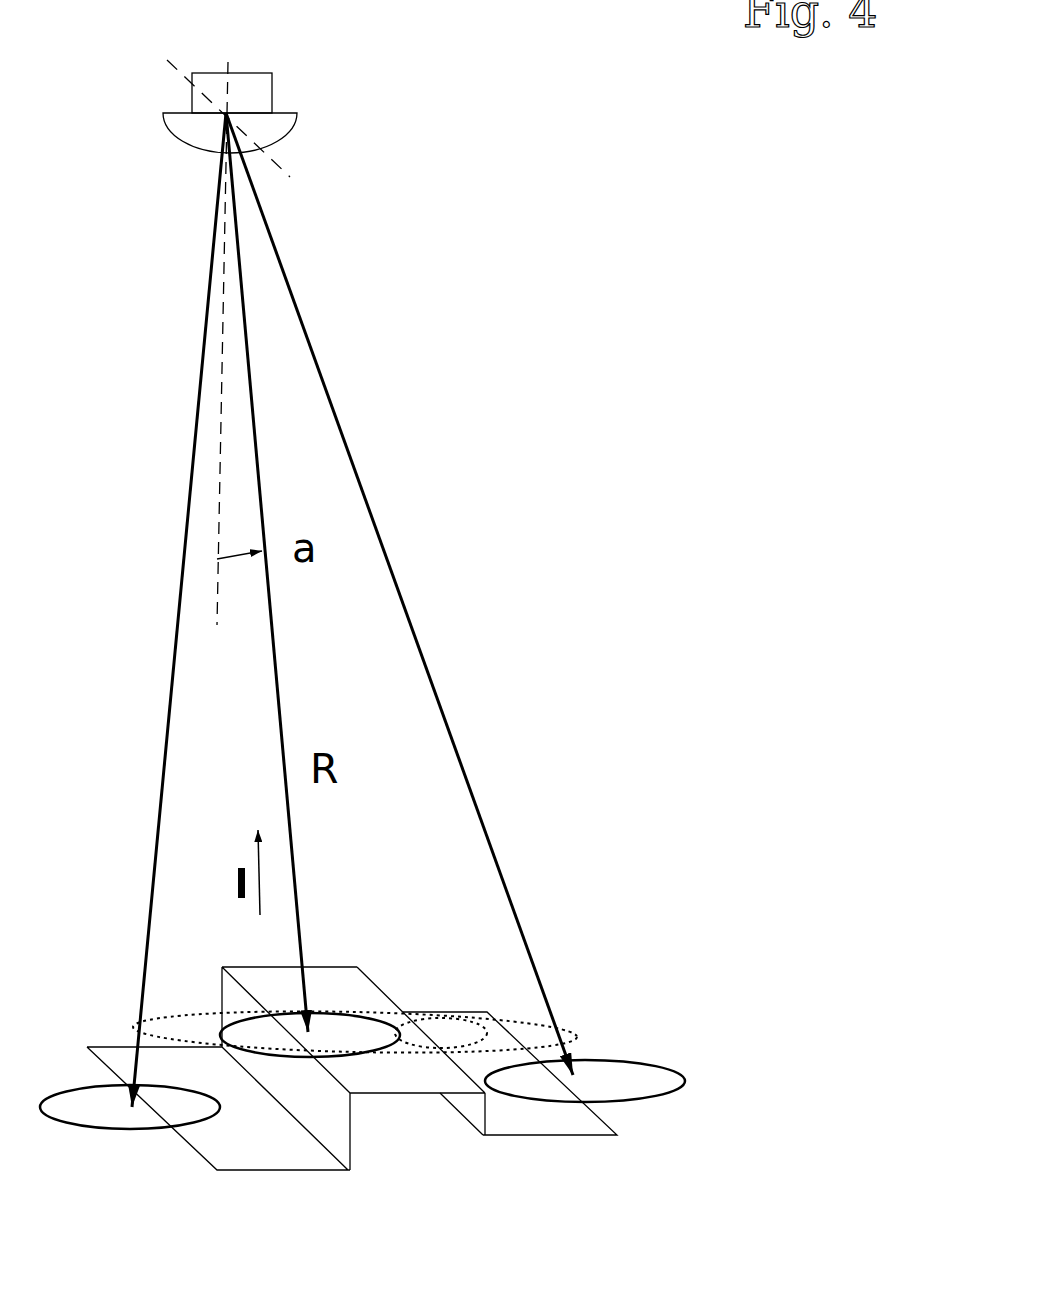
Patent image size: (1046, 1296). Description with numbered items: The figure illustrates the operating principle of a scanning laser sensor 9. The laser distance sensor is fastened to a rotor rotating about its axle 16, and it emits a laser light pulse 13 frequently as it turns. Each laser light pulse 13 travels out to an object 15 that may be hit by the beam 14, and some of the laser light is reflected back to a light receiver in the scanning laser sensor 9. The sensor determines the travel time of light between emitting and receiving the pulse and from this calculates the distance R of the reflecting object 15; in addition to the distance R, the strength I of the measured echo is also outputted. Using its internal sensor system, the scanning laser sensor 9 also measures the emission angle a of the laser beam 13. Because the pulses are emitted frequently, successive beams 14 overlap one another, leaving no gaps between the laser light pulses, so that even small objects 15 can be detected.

The scanning laser sensor 9 is at (273, 105).
The axle 16 is at (280, 168).
The laser light pulse 13 is at (425, 662).
The beam 14 is at (675, 1065).
The object 15 is at (552, 1137).